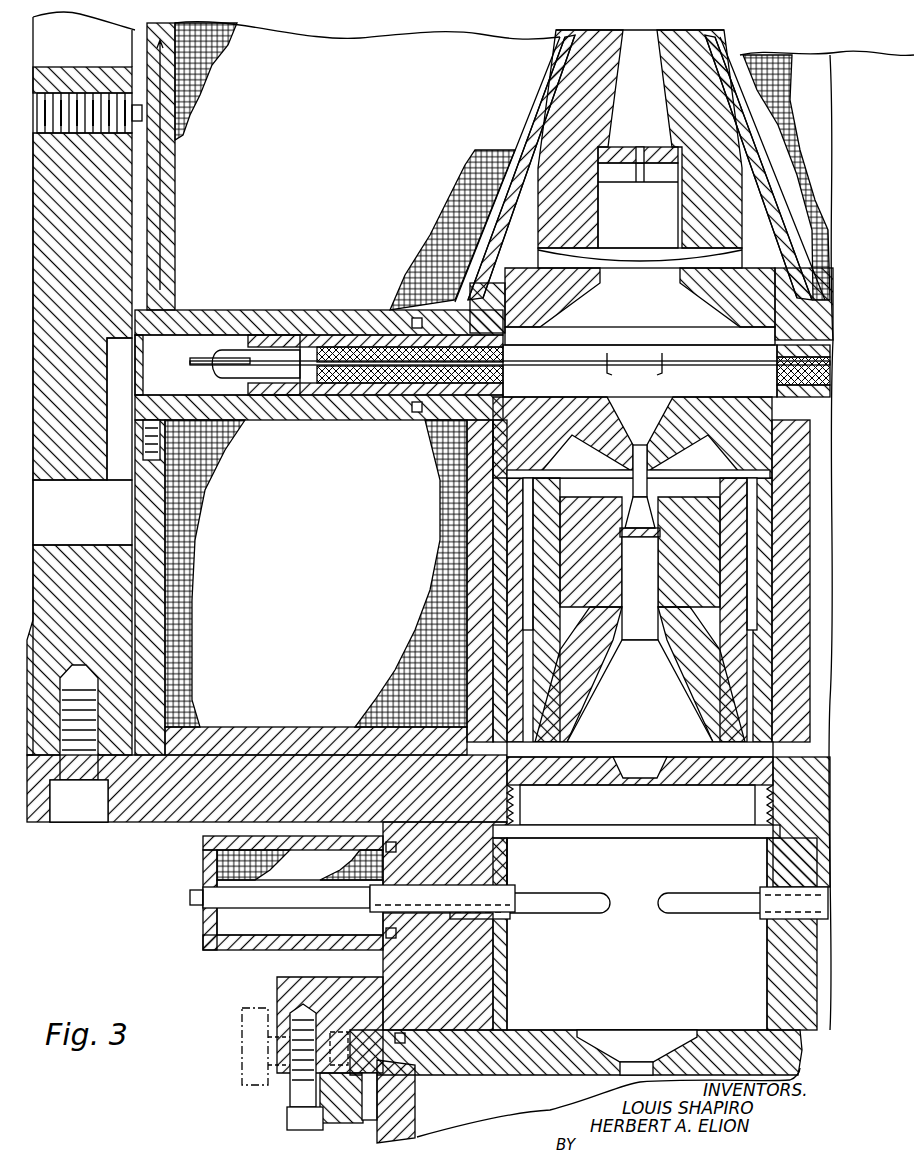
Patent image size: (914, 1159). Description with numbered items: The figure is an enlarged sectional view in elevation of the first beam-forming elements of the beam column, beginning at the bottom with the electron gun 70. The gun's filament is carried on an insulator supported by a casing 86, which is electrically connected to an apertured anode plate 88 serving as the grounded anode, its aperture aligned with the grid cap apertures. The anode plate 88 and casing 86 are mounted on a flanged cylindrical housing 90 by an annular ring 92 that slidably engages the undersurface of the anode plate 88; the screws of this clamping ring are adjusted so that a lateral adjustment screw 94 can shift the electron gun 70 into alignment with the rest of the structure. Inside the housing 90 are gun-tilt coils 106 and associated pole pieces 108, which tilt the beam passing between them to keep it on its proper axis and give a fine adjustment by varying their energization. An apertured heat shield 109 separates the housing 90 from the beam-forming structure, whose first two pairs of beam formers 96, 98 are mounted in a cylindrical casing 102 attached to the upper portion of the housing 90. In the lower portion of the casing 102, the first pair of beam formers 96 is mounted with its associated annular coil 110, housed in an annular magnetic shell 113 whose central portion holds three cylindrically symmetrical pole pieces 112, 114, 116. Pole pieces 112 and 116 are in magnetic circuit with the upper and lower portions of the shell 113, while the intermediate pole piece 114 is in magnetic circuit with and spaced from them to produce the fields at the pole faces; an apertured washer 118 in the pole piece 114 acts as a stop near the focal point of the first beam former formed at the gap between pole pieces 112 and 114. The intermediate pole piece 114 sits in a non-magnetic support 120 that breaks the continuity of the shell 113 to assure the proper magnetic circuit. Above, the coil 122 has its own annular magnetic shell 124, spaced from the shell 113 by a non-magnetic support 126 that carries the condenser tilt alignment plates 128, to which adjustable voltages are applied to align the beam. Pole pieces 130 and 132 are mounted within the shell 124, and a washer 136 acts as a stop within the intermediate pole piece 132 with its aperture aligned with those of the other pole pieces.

The electron gun 70 is at (168, 1116).
The casing 86 is at (412, 1106).
The anode plate 88 is at (472, 1075).
The flanged cylindrical housing 90 is at (278, 990).
The annular ring 92 is at (285, 1104).
The lateral adjustment screw 94 is at (240, 1068).
The first pair of beam formers 96 is at (305, 549).
The second pair of beam formers 98 is at (292, 119).
The cylindrical casing 102 is at (142, 815).
The gun-tilt coils 106 is at (205, 934).
The pole pieces 108 is at (576, 910).
The heat shield 109 is at (548, 783).
The coil 110 is at (328, 616).
The pole piece 112 is at (587, 692).
The annular magnetic shell 113 is at (275, 420).
The intermediate pole piece 114 is at (600, 592).
The pole piece 116 is at (603, 410).
The apertured washer 118 is at (638, 538).
The non-magnetic support 120 is at (445, 522).
The coil 122 is at (333, 176).
The annular magnetic shell 124 is at (355, 322).
The non-magnetic support 126 is at (235, 382).
The condenser tilt alignment plates 128 is at (663, 375).
The pole piece 130 is at (572, 310).
The intermediate pole piece 132 is at (598, 246).
The washer 136 is at (618, 152).